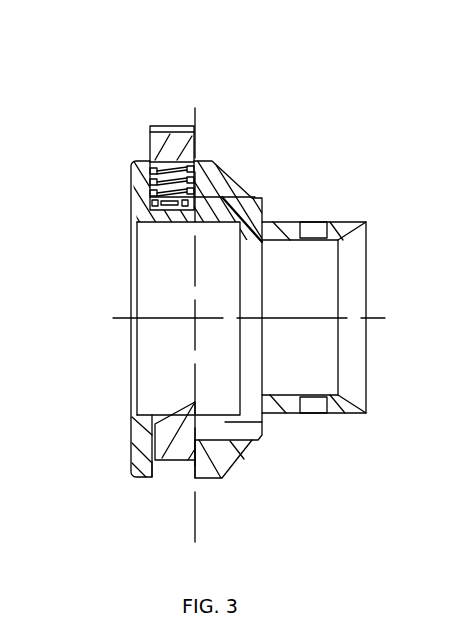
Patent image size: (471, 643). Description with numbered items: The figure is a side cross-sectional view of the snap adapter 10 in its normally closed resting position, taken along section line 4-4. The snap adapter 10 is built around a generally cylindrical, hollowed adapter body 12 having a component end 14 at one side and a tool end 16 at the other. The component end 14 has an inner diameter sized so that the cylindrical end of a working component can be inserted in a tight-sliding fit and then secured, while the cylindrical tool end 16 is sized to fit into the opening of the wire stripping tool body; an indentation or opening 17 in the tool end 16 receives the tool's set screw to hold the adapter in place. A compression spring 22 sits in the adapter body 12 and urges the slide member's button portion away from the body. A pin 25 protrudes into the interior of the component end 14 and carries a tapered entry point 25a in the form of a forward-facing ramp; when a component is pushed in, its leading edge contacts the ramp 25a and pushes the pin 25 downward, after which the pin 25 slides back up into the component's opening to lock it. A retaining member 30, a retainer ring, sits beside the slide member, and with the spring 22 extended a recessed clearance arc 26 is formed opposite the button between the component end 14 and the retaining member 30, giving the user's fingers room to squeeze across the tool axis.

The snap adapter 10 is at (118, 58).
The adapter body 12 is at (252, 196).
The component end 14 is at (132, 478).
The tool end 16 is at (350, 408).
The opening 17 is at (314, 230).
The compression spring 22 is at (150, 167).
The pin 25 is at (172, 458).
The tapered entry point 25a is at (166, 412).
The clearance arc 26 is at (186, 470).
The retaining member 30 is at (235, 465).
The section line 4- 4 is at (195, 545).